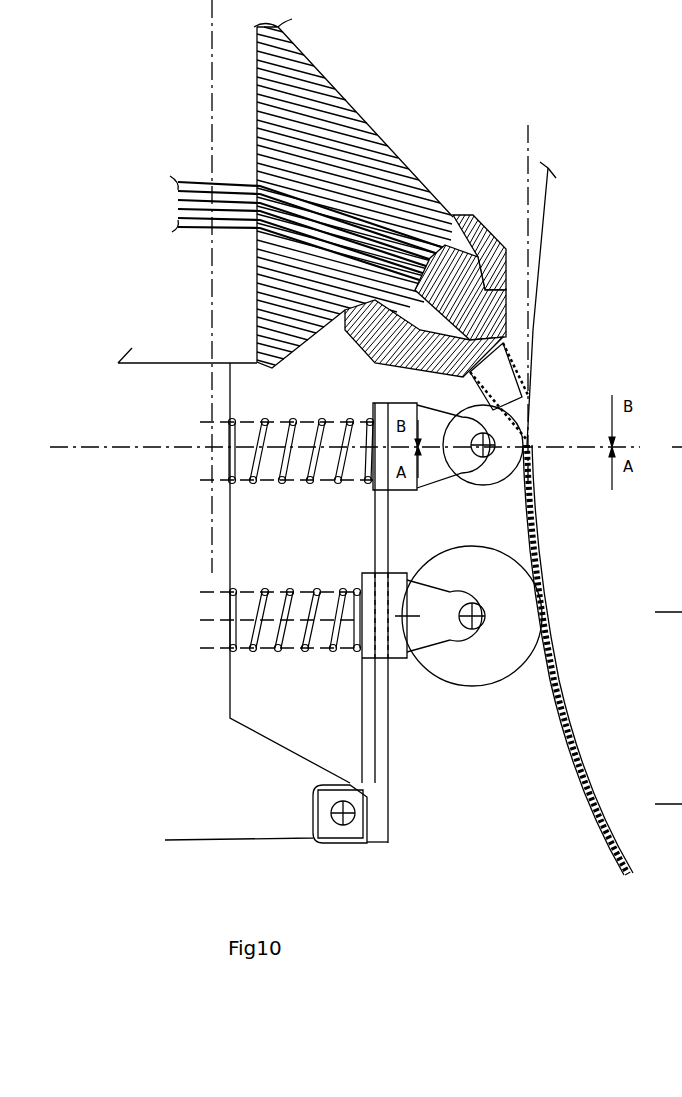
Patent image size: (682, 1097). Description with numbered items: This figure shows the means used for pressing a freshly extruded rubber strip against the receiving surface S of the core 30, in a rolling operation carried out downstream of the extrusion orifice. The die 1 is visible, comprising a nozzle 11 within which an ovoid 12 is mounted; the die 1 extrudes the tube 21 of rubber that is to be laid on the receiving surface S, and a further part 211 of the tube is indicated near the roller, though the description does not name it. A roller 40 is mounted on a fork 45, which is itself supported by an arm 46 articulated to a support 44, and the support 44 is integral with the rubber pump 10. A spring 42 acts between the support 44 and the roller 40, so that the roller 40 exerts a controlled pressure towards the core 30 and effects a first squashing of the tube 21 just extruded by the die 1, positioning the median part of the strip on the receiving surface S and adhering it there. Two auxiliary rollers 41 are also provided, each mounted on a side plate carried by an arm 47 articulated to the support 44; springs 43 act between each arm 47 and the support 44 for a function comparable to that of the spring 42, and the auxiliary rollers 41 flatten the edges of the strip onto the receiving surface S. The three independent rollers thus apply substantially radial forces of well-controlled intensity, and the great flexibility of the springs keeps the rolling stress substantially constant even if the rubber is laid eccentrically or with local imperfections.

The rubber pump 10 is at (237, 48).
The die 1 is at (517, 242).
The nozzle 11 is at (507, 300).
The ovoid 12 is at (520, 348).
The tube 21 is at (505, 380).
The guide surface 211 is at (503, 388).
The roller 40 is at (515, 433).
The auxiliary rollers 41 is at (500, 585).
The spring 42 is at (255, 478).
The springs 43 is at (262, 592).
The support 44 is at (247, 808).
The fork 45 is at (433, 468).
The arm 46 is at (381, 503).
The arm 47 is at (370, 732).
The core 30 is at (603, 677).
The receiving surface S is at (538, 178).